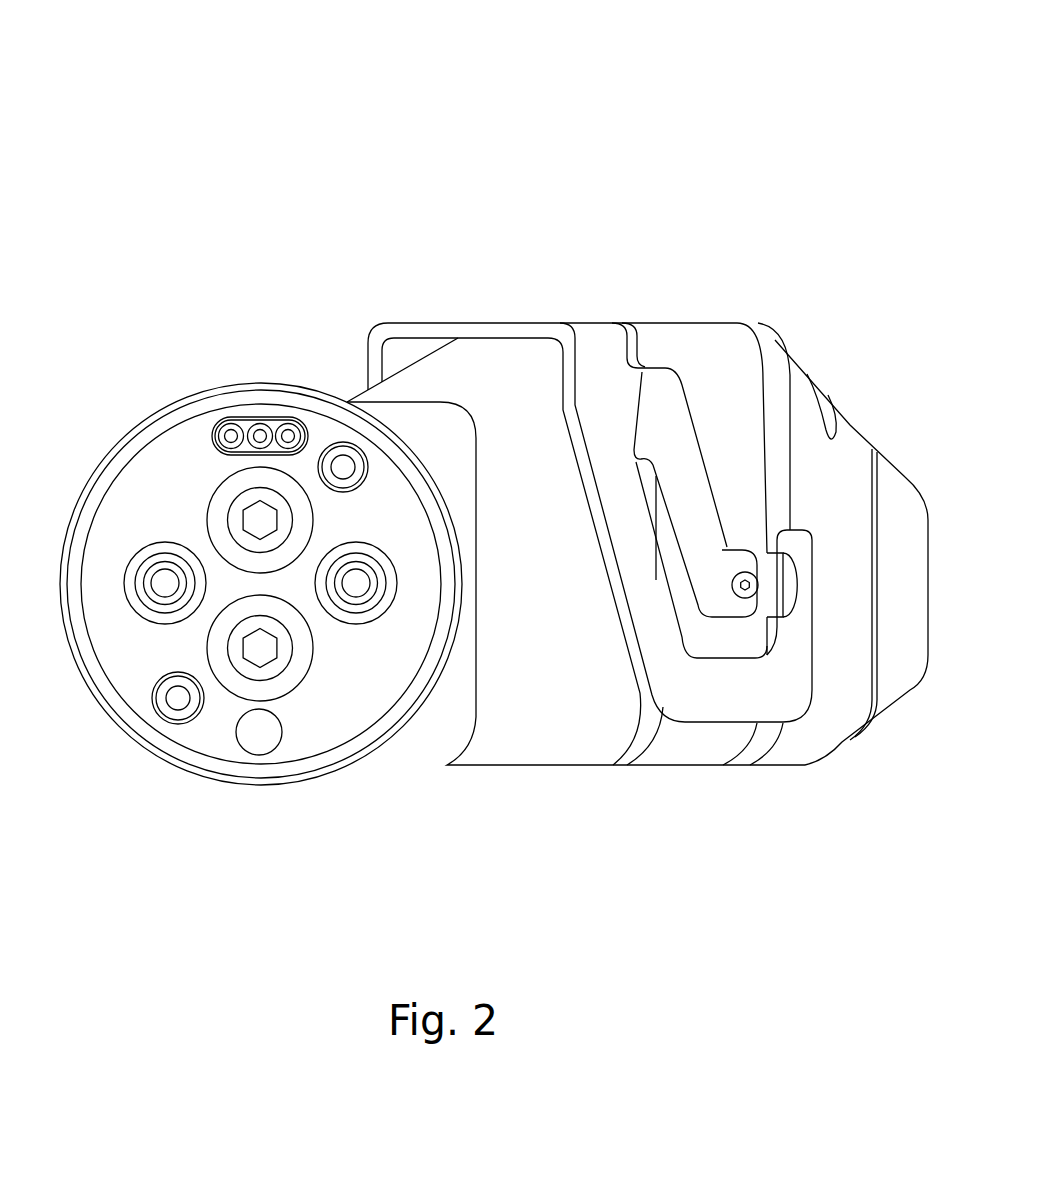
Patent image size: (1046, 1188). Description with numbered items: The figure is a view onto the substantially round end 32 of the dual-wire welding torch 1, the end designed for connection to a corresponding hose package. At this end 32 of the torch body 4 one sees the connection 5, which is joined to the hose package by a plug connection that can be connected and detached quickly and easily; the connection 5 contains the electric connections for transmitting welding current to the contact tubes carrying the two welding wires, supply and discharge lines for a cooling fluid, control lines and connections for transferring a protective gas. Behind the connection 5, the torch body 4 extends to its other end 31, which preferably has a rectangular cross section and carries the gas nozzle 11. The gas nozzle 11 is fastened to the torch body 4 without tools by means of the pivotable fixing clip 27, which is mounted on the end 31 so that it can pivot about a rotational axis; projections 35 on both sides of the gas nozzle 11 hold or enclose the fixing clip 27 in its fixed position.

The dual-wire welding torch 1 is at (588, 118).
The torch body 4 is at (547, 668).
The connection 5 is at (158, 653).
The gas nozzle 11 is at (911, 719).
The pivotable fixing clip 27 is at (703, 680).
The end of the torch body 31 is at (906, 409).
The end of the torch body facing the hose package 32 is at (123, 394).
The projections 35 is at (773, 580).